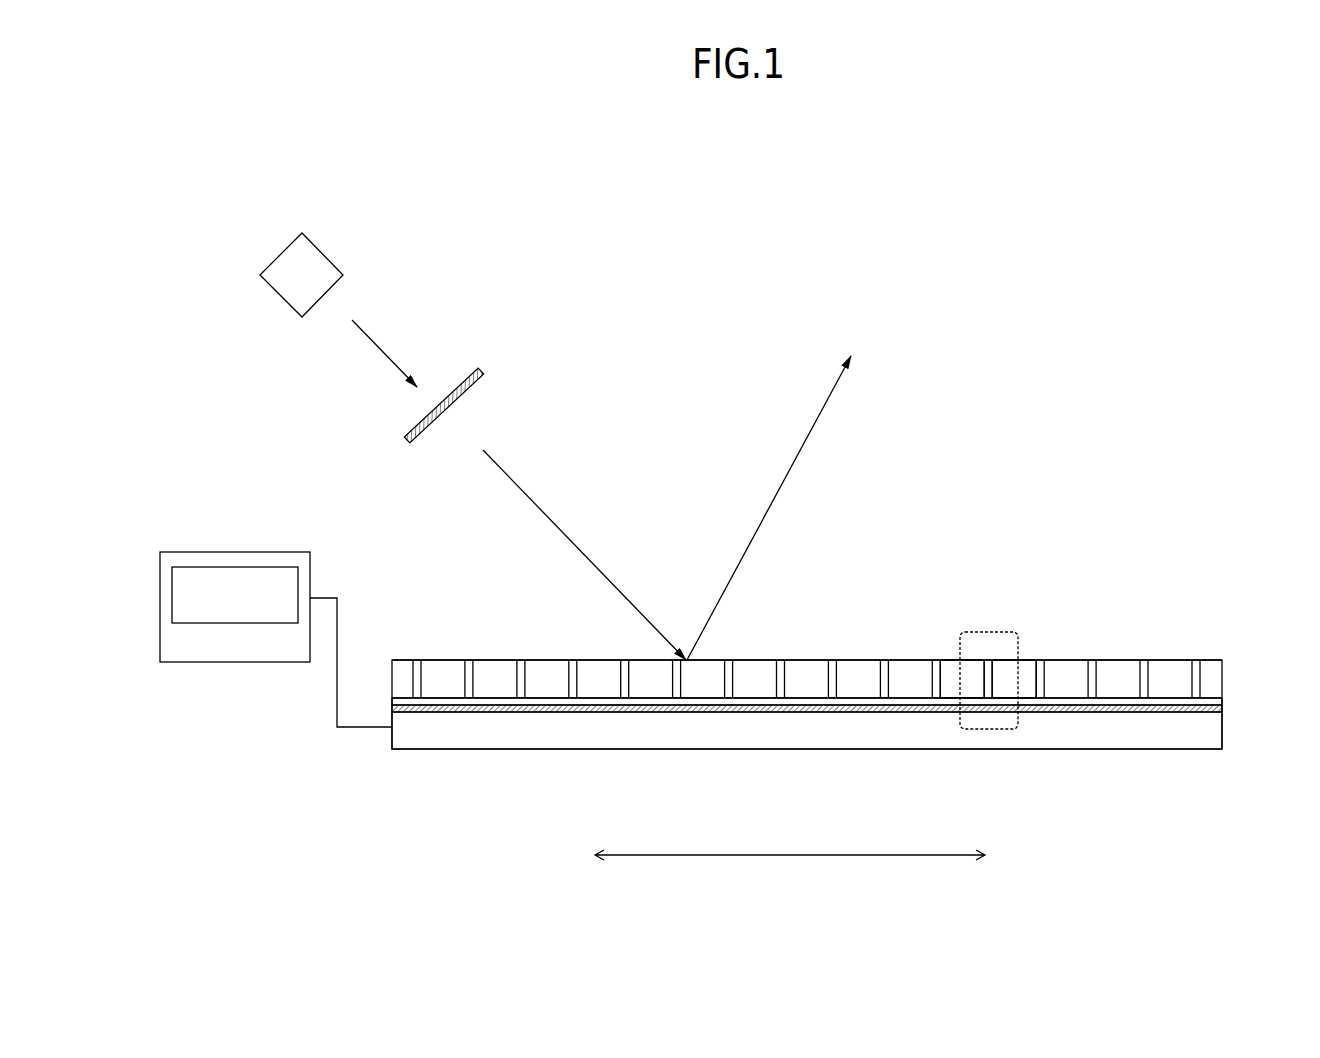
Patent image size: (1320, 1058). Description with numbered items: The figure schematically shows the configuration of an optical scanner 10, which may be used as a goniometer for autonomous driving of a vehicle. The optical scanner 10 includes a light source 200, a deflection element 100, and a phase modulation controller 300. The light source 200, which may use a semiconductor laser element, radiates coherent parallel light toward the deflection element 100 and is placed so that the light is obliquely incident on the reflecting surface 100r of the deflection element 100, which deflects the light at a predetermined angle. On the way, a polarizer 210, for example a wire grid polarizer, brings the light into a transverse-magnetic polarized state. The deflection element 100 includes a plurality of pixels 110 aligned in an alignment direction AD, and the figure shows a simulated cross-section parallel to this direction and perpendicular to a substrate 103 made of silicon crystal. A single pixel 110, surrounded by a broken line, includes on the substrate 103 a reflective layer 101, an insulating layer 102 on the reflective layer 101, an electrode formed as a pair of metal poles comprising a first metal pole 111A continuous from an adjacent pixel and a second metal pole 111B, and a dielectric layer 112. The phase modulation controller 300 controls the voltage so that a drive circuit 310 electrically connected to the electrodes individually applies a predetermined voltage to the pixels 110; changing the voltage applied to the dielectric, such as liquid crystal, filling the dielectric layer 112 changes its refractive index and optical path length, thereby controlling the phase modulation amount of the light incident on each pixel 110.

The optical scanner 10 is at (1008, 256).
The deflection element 100 is at (1135, 622).
The reflecting surface 100r is at (642, 657).
The reflective layer 101 is at (1222, 712).
The insulating layer 102 is at (1222, 700).
The substrate 103 is at (1163, 749).
The pixel 110 is at (1013, 632).
The first metal pole 111A is at (975, 672).
The second metal pole 111B is at (1005, 672).
The dielectric layer 112 is at (988, 660).
The light source 200 is at (325, 250).
The polarizer 210 is at (477, 367).
The phase modulation controller 300 is at (287, 552).
The drive circuit 310 is at (220, 567).
The alignment direction AD is at (798, 855).